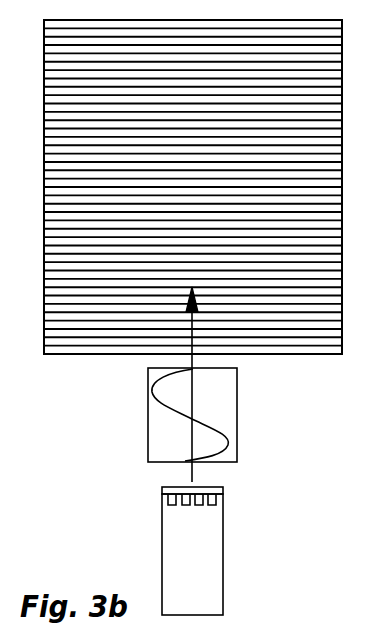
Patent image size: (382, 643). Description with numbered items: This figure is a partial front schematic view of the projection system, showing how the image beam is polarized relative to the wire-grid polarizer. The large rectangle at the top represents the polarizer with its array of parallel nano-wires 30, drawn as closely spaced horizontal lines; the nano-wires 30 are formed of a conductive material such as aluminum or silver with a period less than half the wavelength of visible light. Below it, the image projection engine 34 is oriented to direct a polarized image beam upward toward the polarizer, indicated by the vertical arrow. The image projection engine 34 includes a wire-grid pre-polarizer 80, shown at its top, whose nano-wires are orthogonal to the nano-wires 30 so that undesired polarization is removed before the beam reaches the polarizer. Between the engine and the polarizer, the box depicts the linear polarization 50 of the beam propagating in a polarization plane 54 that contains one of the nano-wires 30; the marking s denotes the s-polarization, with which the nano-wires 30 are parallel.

The nano-wires 30 is at (313, 354).
The linear polarization 50 is at (162, 409).
The polarization plane 54 is at (237, 383).
The scan path s is at (146, 451).
The image projection engine 34 is at (223, 537).
The wire-grid pre-polarizer 80 is at (162, 493).